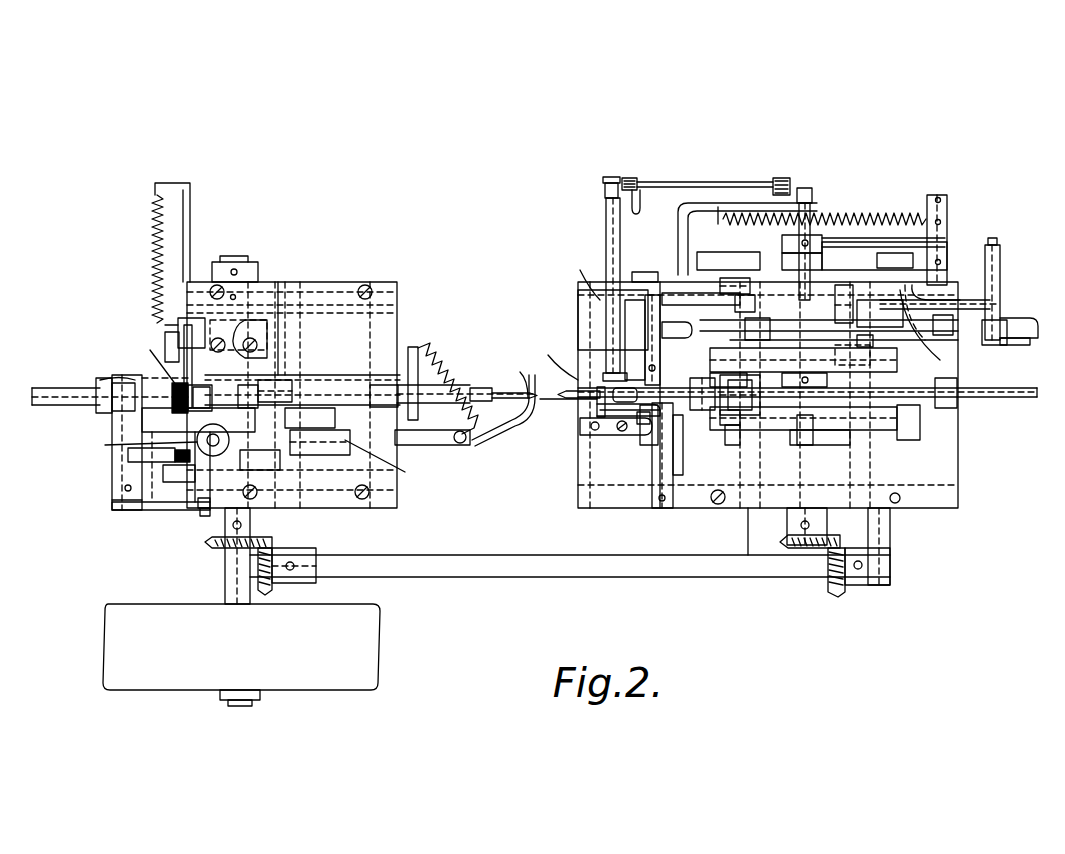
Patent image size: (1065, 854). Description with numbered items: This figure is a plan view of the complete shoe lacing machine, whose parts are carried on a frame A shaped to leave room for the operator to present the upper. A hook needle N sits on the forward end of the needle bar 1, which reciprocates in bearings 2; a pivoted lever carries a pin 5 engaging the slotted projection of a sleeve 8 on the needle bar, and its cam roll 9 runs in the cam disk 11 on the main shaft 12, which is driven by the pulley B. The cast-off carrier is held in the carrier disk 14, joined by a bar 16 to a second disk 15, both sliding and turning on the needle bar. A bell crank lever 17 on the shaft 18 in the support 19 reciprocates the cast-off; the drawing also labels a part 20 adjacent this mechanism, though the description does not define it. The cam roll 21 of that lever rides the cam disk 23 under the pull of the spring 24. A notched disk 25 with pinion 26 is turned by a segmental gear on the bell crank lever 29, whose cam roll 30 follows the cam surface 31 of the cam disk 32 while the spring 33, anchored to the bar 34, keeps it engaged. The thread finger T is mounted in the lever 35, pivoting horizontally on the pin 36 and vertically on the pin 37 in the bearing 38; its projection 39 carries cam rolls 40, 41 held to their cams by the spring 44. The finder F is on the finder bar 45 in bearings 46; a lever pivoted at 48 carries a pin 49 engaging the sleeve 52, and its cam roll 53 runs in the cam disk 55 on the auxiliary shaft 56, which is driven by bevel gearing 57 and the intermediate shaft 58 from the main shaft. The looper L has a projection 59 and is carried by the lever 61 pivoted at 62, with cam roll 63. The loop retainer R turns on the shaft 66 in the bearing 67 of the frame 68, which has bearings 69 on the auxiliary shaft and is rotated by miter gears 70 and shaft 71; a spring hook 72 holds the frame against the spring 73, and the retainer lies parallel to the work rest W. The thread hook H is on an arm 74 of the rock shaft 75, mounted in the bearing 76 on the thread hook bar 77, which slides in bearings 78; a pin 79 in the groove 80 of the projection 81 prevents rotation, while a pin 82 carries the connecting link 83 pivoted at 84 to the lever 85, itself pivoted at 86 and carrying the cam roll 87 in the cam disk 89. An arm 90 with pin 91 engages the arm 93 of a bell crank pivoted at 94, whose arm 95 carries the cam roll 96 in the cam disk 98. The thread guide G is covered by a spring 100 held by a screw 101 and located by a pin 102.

The needle bar 1 is at (42, 392).
The bearings 2 is at (375, 407).
The pin 5 is at (290, 382).
The sleeve 8 is at (255, 385).
The cam roll 9 is at (600, 435).
The cam disk 11 is at (190, 413).
The main shaft 12 is at (225, 575).
The carrier disk 14 is at (418, 360).
The carrier disk 15 is at (100, 380).
The bar 16 is at (362, 376).
The bell crank lever 17 is at (125, 455).
The shaft 18 is at (142, 465).
The support 19 is at (112, 496).
The frame 20 is at (203, 387).
The cam roll 21 is at (265, 462).
The cam disk 23 is at (180, 478).
The spring 24 is at (105, 445).
The disk 25 is at (184, 362).
The pinion 26 is at (150, 350).
The bell crank lever 29 is at (165, 340).
The cam roll 30 is at (185, 325).
The cam surface 31 is at (250, 322).
The cam disk 32 is at (270, 313).
The spring 33 is at (152, 243).
The bar 34 is at (190, 213).
The thread finger carrying lever 35 is at (415, 448).
The pin 36 is at (140, 448).
The pin 37 is at (198, 508).
The bearing 38 is at (204, 516).
The projection 39 is at (405, 472).
The cam roll 40 is at (330, 456).
The cam roll 41 is at (318, 420).
The spring 44 is at (440, 388).
The finder bar 45 is at (976, 397).
The bearings 46 is at (700, 410).
The pivot 48 is at (748, 510).
The pin 49 is at (730, 445).
The sleeve 52 is at (748, 400).
The cam roll 53 is at (728, 425).
The cam disk 55 is at (815, 418).
The auxiliary shaft 56 is at (810, 468).
The bevel gearing 57 is at (270, 540).
The intermediate shaft 58 is at (695, 570).
The projection 59 is at (580, 391).
The lever 61 is at (675, 475).
The pivot 62 is at (652, 470).
The cam roll 63 is at (800, 445).
The shaft 66 is at (606, 178).
The bearing 67 is at (606, 228).
The frame 68 is at (678, 240).
The bearings 69 is at (812, 192).
The miter gears 70 is at (632, 178).
The shaft 71 is at (735, 182).
The spring hook 72 is at (650, 280).
The spring 73 is at (860, 214).
The arm 74 is at (585, 412).
The rock shaft 75 is at (645, 330).
The bearing 76 is at (634, 340).
The thread hook bar 77 is at (700, 310).
The bearings 78 is at (762, 326).
The pin 79 is at (1000, 338).
The groove 80 is at (1030, 333).
The projection 81 is at (1020, 318).
The pin 82 is at (998, 240).
The connecting link 83 is at (968, 300).
The pivot 84 is at (848, 290).
The lever 85 is at (940, 360).
The pivot 86 is at (873, 340).
The cam roll 87 is at (850, 360).
The cam disk 89 is at (803, 361).
The arm 90 is at (680, 312).
The pin 91 is at (738, 280).
The arm 93 is at (935, 290).
The pivot 94 is at (950, 280).
The arm 95 is at (884, 246).
The cam roll 96 is at (800, 258).
The cam disk 98 is at (895, 262).
The spring 100 is at (592, 430).
The screw 101 is at (622, 431).
The pin 102 is at (645, 445).
The frame A is at (768, 395).
The pulley B is at (241, 655).
The finder F is at (597, 405).
The thread guide G is at (640, 425).
The thread hook H is at (600, 386).
The looper L is at (559, 354).
The needle N is at (514, 369).
The loop retainer R is at (578, 276).
The thread finger T is at (512, 428).
The work rest W is at (578, 320).